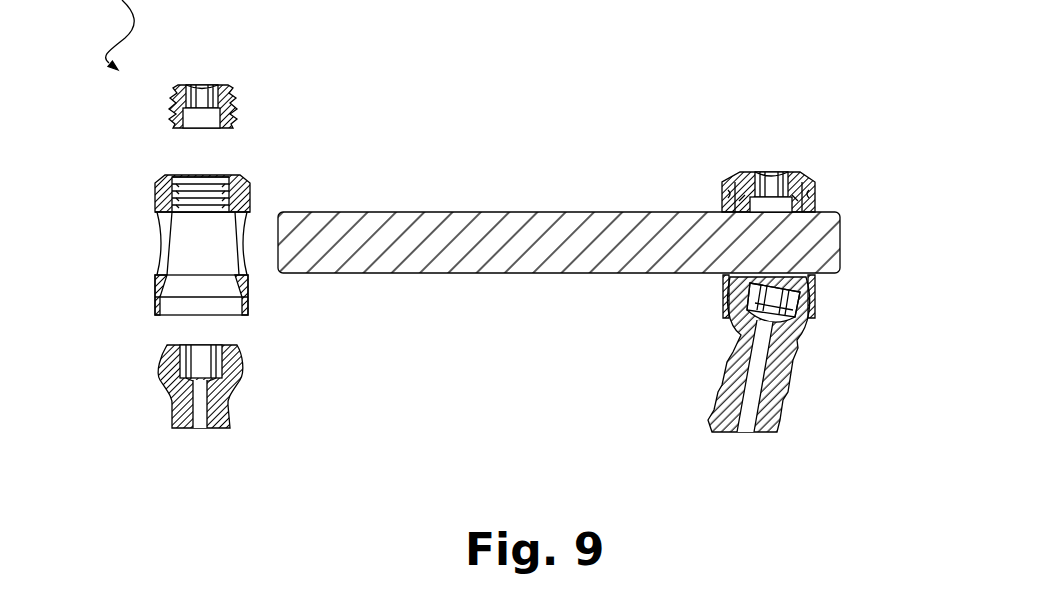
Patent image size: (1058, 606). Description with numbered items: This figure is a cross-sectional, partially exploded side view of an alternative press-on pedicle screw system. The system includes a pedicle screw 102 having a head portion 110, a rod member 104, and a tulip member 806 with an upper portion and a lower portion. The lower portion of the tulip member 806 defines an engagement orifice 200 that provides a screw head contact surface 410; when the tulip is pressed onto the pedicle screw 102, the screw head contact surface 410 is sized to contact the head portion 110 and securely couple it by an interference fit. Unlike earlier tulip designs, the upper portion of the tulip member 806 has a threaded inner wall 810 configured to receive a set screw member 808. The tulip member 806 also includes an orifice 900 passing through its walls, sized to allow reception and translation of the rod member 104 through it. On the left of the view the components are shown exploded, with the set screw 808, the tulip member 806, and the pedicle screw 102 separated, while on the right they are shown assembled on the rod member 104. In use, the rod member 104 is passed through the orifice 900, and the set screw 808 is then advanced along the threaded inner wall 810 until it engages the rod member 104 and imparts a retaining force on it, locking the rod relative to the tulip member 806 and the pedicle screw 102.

The rod member 104 is at (507, 212).
The set screw member 808 is at (237, 103).
The tulip member 806 is at (157, 193).
The threaded inner wall 810 is at (212, 182).
The orifice 900 is at (148, 242).
The engagement orifice 200 is at (180, 320).
The head portion 110 is at (240, 370).
The screw head contact surface 410 is at (815, 328).
The pedicle screw 102 is at (795, 425).